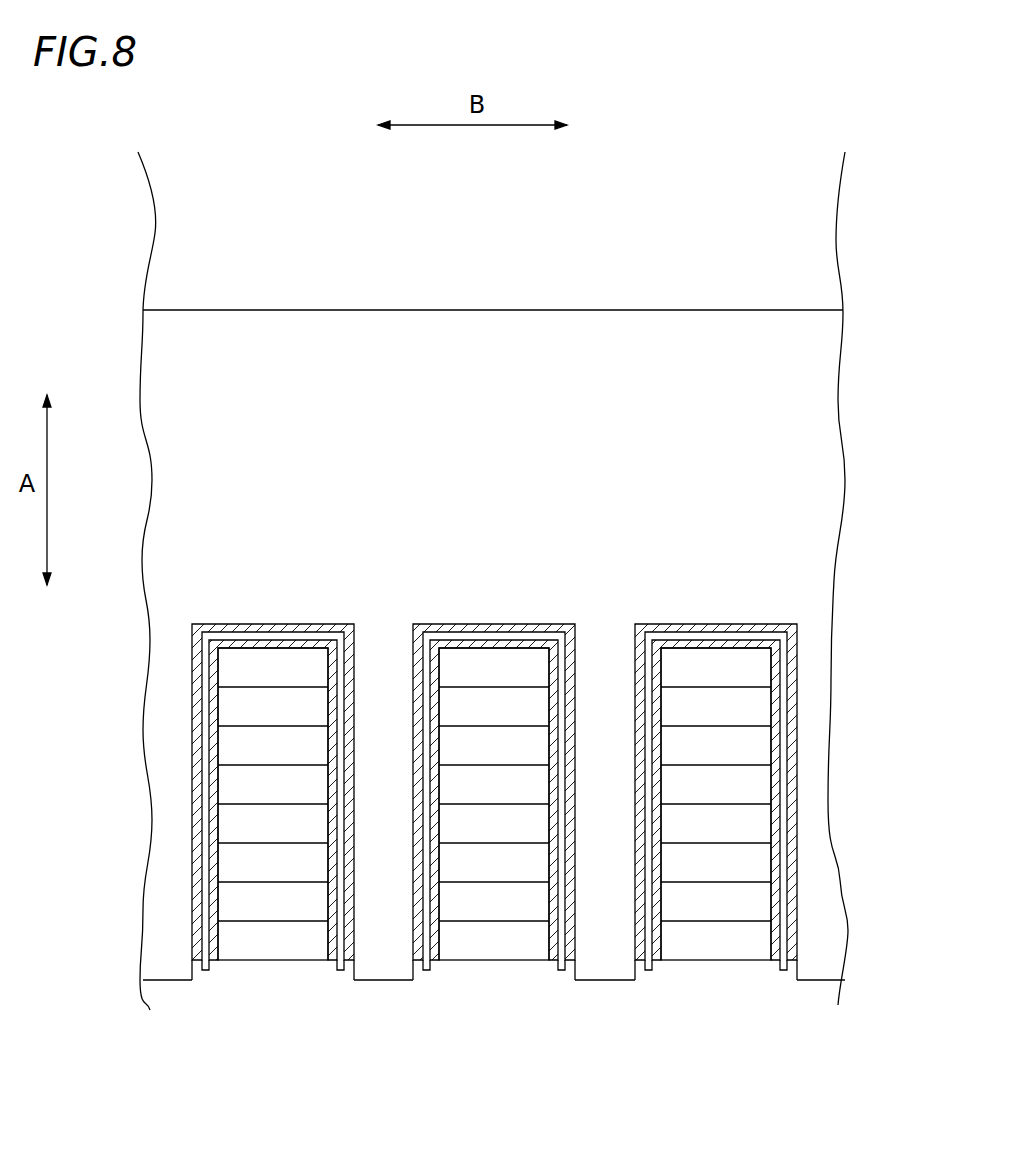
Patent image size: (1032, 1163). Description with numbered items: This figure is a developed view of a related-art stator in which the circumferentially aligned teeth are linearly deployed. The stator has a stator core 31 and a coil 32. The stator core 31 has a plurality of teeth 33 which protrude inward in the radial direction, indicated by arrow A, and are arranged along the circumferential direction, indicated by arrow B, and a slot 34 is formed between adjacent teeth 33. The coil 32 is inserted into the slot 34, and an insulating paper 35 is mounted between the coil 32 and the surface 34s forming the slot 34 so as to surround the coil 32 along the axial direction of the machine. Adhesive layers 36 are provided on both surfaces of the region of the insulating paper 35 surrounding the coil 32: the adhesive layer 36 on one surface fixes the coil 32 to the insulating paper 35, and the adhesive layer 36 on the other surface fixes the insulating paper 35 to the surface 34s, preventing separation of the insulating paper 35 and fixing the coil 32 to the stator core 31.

The stator core 31 is at (302, 308).
The coil 32 is at (250, 965).
The teeth 33 is at (173, 967).
The slot 34 is at (490, 965).
The surface forming the slot 34s is at (800, 797).
The insulating paper 35 is at (335, 965).
The adhesive layer 36 is at (427, 969).